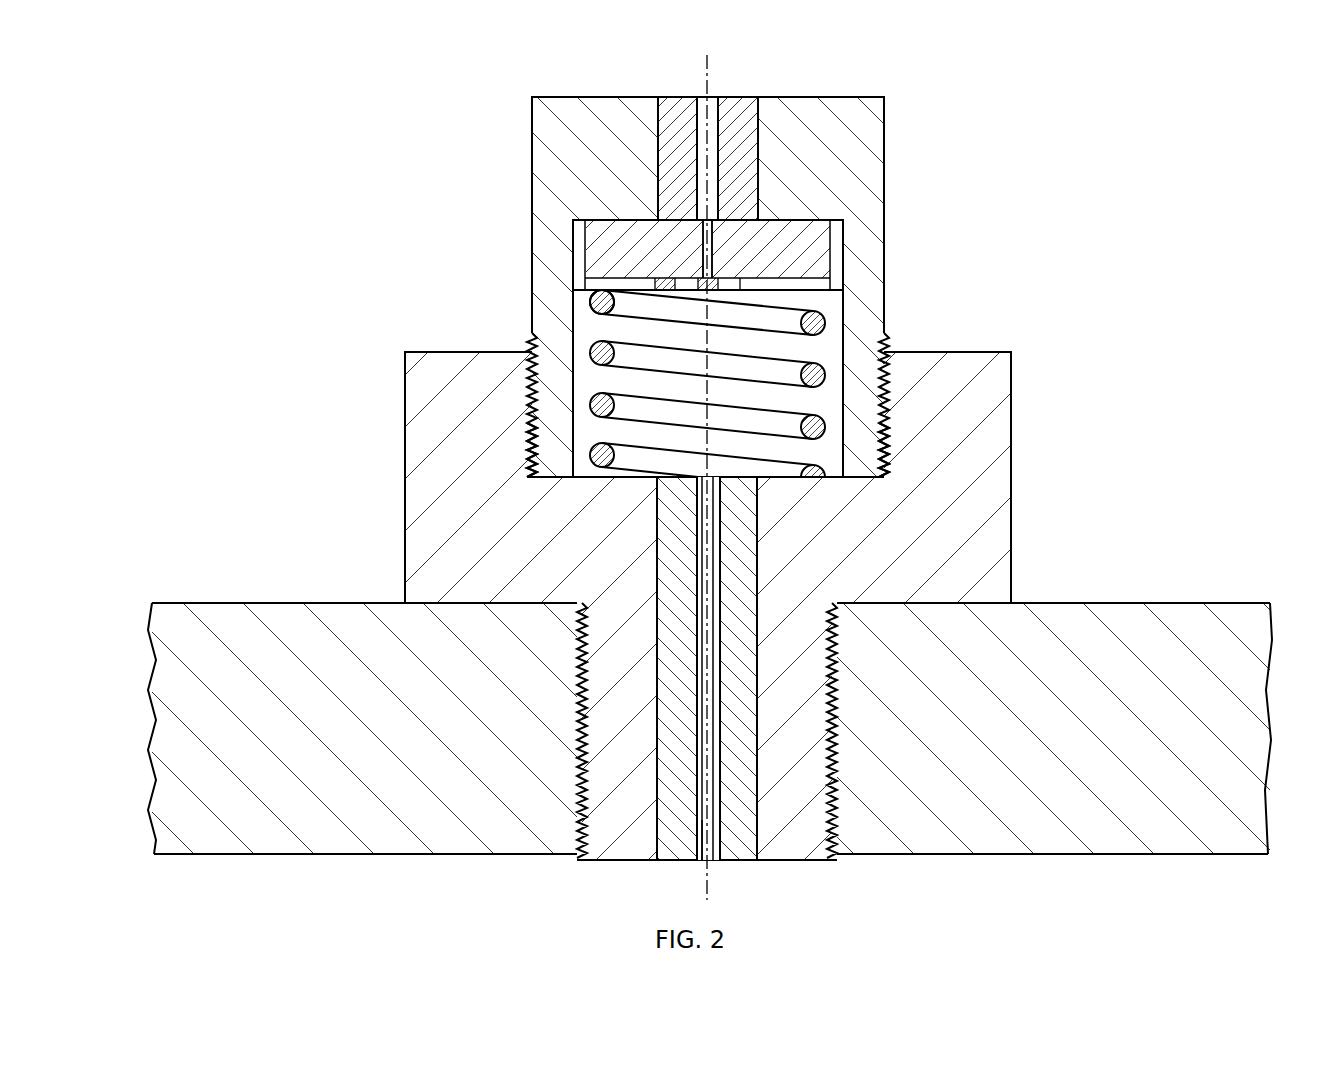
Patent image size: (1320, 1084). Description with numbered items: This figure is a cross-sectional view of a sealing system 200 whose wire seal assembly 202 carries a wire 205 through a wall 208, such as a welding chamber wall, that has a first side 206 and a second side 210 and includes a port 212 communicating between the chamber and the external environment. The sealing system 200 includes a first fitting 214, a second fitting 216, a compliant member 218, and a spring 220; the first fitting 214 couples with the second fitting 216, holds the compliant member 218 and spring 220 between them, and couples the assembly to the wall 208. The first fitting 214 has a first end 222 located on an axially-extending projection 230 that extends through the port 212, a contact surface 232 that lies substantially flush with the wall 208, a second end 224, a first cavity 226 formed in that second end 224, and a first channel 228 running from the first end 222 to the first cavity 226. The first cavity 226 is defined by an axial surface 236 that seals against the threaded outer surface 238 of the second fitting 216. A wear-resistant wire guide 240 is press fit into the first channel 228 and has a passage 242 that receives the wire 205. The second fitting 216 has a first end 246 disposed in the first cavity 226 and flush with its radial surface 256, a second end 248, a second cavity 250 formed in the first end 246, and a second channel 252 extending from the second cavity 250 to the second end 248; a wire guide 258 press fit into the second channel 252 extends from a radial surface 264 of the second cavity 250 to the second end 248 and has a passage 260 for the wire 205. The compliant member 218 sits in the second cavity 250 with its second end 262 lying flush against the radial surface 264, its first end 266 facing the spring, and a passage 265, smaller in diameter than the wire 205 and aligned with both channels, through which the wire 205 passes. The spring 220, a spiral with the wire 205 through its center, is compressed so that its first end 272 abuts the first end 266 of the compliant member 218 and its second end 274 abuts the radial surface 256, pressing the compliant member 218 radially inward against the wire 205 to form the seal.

The sealing system 200 is at (1080, 143).
The wire seal assembly 202 is at (1009, 264).
The wire 205 is at (708, 68).
The first side 206 is at (280, 403).
The wall 208 is at (283, 602).
The second side 210 is at (243, 938).
The port 212 is at (585, 748).
The first fitting 214 is at (1012, 520).
The second fitting 216 is at (884, 128).
The compliant member 218 is at (822, 226).
The spring 220 is at (800, 372).
The first end 222 is at (805, 860).
The second end 224 is at (440, 352).
The first cavity 226 is at (532, 390).
The first channel 228 is at (706, 572).
The axially-extending projection 230 is at (805, 722).
The contact surface 232 is at (945, 604).
The axial surface 236 is at (878, 450).
The outer surface 238 is at (530, 440).
The wire guide 240 is at (740, 860).
The passage 242 is at (699, 860).
The first end 246 is at (537, 479).
The second end 248 is at (588, 97).
The second cavity 250 is at (586, 322).
The second channel 252 is at (752, 124).
The radial surface 256 is at (588, 479).
The wire guide 258 is at (660, 122).
The passage 260 is at (700, 117).
The second end 262 is at (622, 220).
The radial surface 264 is at (792, 232).
The passage 265 is at (714, 258).
The first end 266 is at (752, 284).
The first end 272 is at (600, 300).
The second end 274 is at (775, 479).